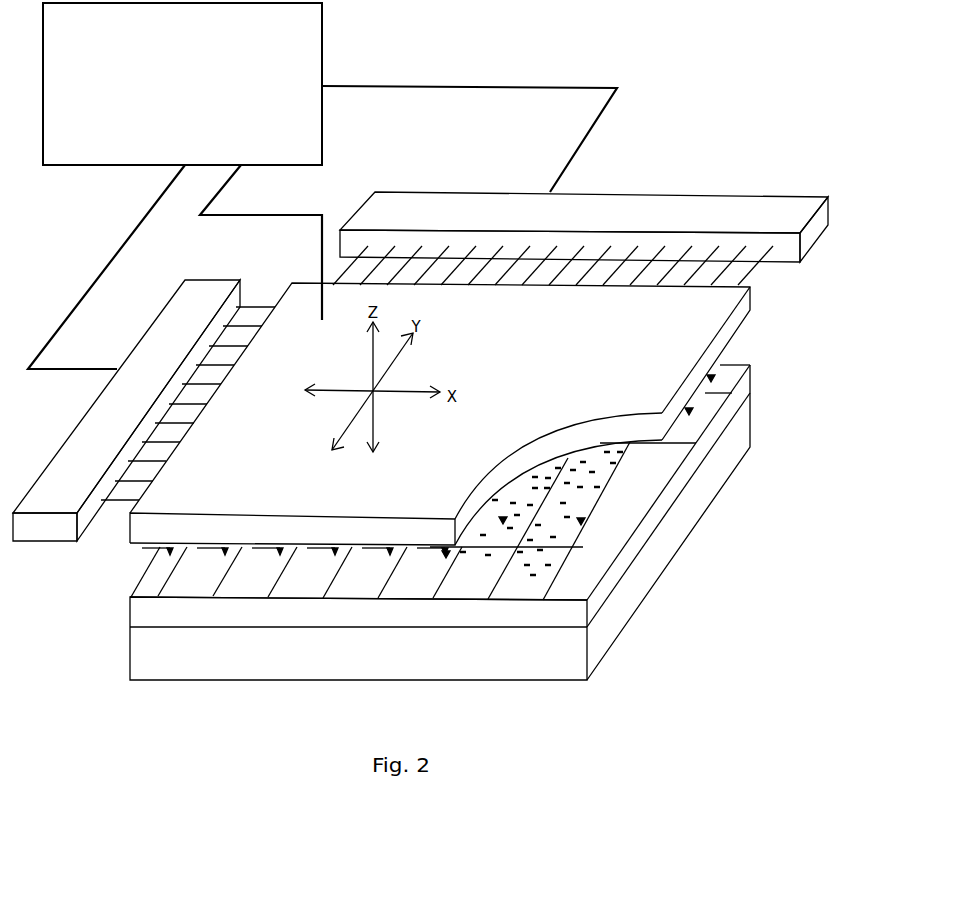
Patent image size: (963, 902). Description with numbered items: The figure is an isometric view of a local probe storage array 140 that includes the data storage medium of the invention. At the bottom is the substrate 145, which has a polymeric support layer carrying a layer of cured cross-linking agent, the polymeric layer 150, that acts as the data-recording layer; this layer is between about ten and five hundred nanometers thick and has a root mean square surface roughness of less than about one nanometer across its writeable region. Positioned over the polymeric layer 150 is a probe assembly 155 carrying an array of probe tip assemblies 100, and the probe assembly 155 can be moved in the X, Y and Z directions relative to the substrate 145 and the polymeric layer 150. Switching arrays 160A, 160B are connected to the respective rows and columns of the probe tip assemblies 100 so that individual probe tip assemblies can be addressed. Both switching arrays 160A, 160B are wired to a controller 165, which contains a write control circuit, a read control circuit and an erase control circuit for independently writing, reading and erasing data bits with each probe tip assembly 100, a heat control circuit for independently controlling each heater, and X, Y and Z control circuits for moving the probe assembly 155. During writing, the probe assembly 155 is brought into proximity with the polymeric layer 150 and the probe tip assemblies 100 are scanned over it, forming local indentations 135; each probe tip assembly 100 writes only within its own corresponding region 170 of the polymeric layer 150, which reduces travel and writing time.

The controller 165 is at (298, 155).
The local probe storage array 140 is at (703, 131).
The switching array 160B is at (622, 226).
The switching array 160A is at (147, 416).
The probe assembly 155 is at (603, 365).
The region 170 is at (490, 503).
The polymeric layer 150 is at (647, 530).
The substrate 145 is at (447, 666).
The local indentations 135 is at (573, 518).
The probe tip assembly 100 is at (495, 520).